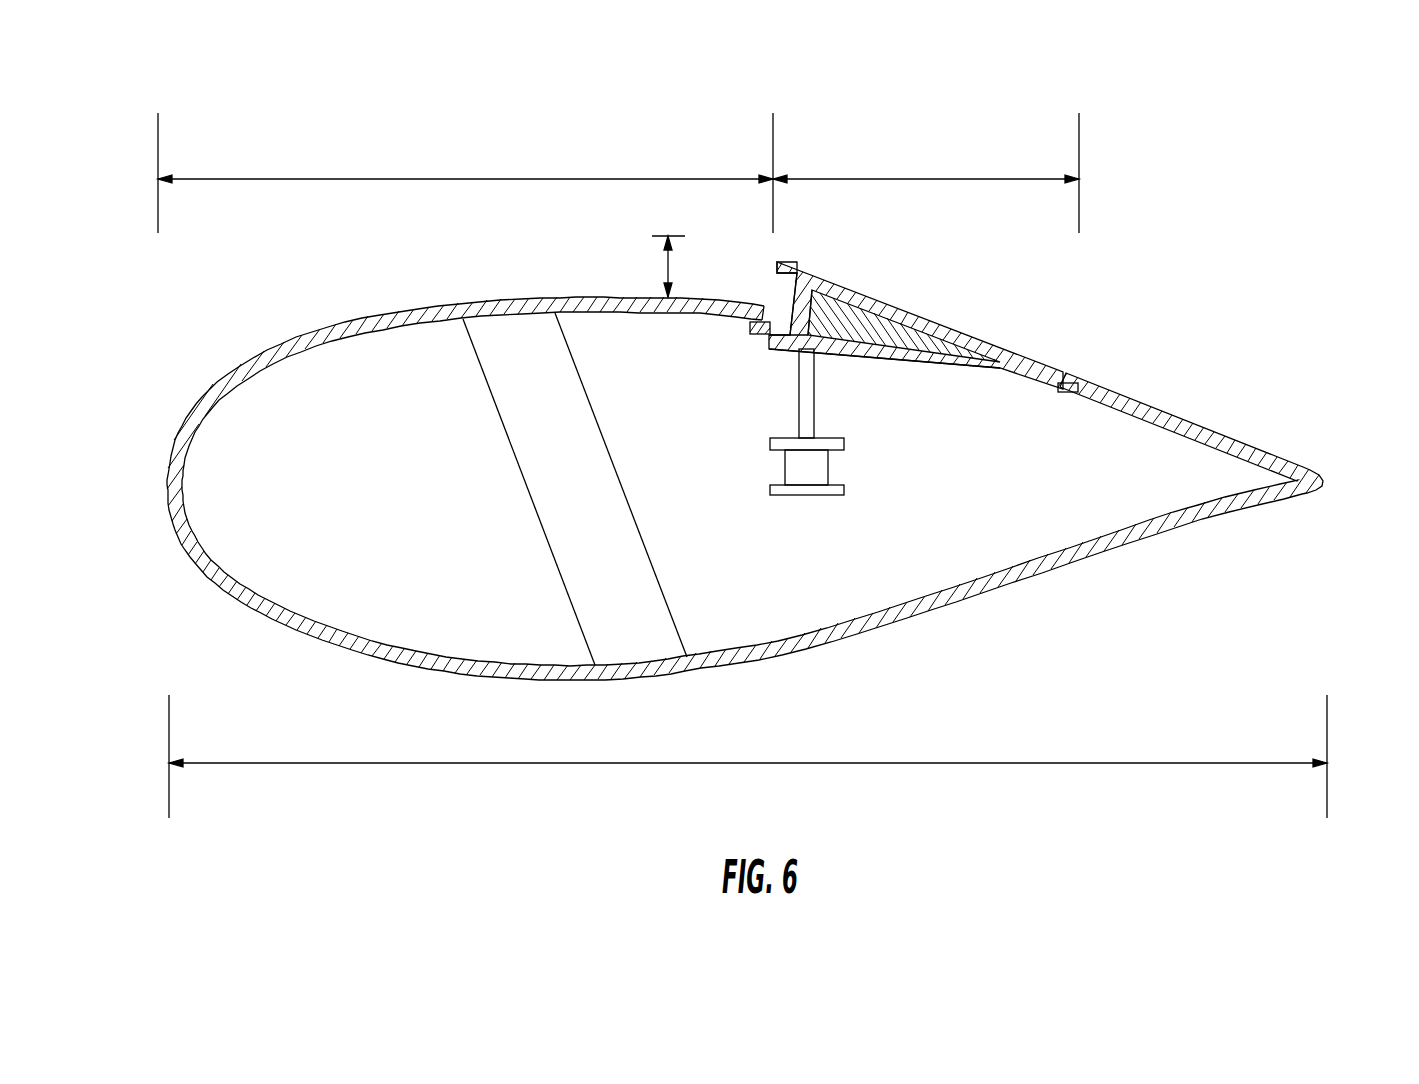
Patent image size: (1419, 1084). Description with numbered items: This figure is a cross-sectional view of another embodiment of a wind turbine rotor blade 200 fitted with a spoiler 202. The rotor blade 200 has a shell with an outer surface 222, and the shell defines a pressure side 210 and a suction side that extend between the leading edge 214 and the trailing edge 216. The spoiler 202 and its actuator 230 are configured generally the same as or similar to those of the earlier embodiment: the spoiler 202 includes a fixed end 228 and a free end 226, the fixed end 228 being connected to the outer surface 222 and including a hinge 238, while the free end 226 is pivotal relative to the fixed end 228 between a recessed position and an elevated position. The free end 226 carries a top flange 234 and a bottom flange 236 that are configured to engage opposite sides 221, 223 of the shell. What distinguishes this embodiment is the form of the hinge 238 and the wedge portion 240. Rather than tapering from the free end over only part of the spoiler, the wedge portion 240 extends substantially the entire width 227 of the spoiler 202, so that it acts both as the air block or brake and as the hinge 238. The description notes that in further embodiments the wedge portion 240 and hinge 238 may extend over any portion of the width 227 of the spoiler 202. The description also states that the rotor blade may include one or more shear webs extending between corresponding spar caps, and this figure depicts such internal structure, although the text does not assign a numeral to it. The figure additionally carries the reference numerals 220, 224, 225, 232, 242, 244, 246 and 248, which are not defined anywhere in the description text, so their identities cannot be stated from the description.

The rotor blade 200 is at (751, 446).
The spoiler 202 is at (896, 311).
The pressure side 210 is at (778, 662).
The leading edge 214 is at (172, 470).
The trailing edge 216 is at (1330, 487).
The chord length 220 is at (970, 763).
The side of the shell 221 is at (750, 303).
The outer surface 222 is at (345, 322).
The side of the shell 223 is at (762, 335).
The forward section length 224 is at (433, 179).
The fastening block 225 is at (752, 324).
The free end 226 is at (848, 263).
The width 227 is at (912, 178).
The fixed end 228 is at (1066, 348).
The actuator 230 is at (778, 468).
The actuator rod 232 is at (797, 425).
The top flange 234 is at (800, 275).
The bottom flange 236 is at (784, 343).
The hinge 238 is at (1075, 378).
The wedge portion 240 is at (888, 362).
The forward tab 242 is at (773, 260).
The filler 244 is at (928, 302).
The step height 246 is at (664, 270).
The spar 248 is at (568, 600).